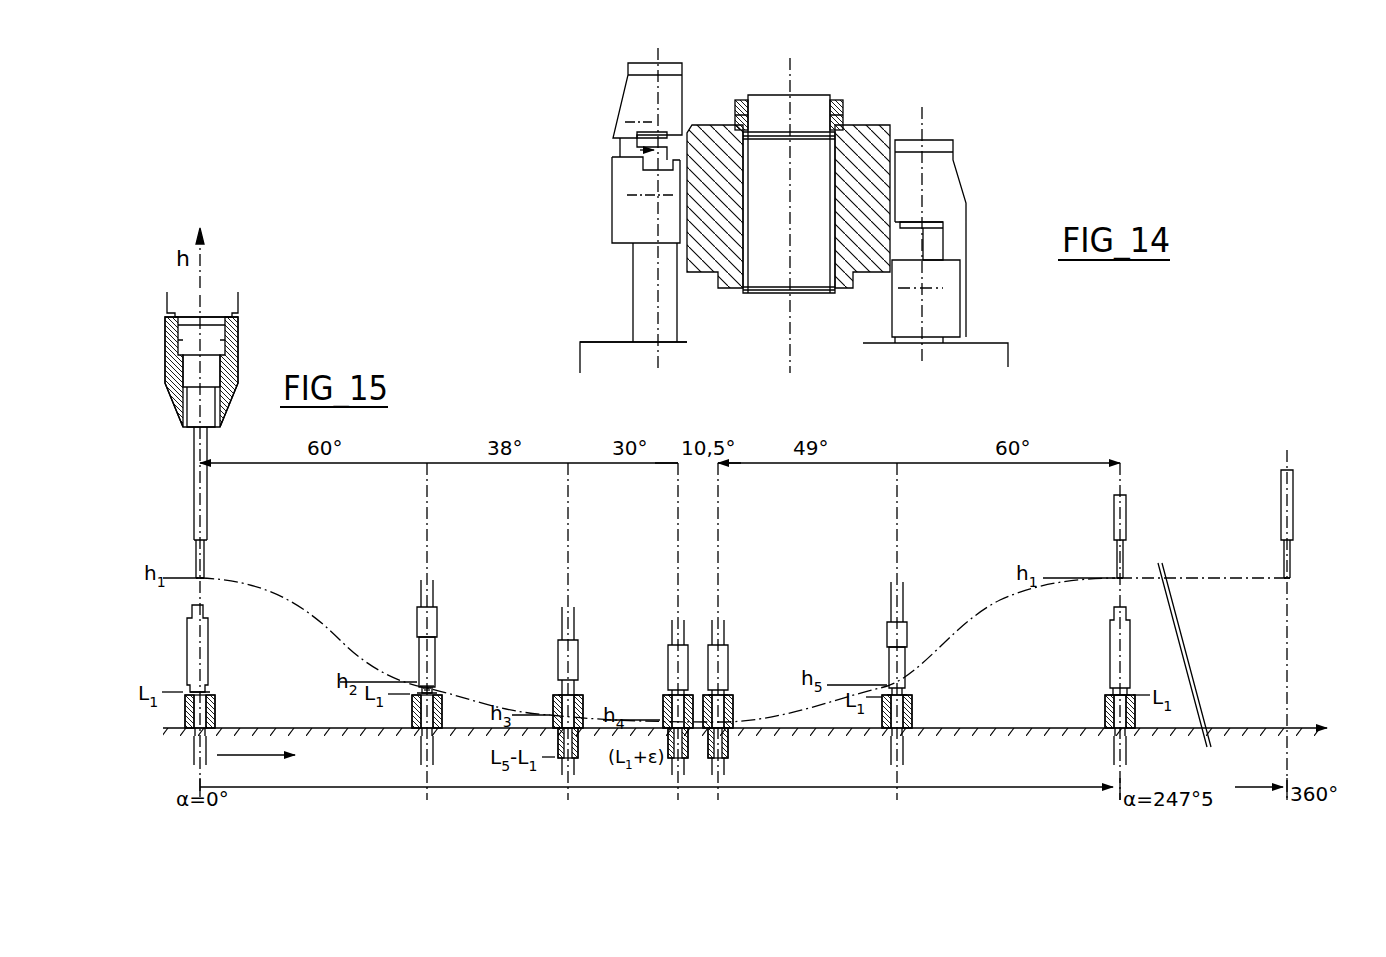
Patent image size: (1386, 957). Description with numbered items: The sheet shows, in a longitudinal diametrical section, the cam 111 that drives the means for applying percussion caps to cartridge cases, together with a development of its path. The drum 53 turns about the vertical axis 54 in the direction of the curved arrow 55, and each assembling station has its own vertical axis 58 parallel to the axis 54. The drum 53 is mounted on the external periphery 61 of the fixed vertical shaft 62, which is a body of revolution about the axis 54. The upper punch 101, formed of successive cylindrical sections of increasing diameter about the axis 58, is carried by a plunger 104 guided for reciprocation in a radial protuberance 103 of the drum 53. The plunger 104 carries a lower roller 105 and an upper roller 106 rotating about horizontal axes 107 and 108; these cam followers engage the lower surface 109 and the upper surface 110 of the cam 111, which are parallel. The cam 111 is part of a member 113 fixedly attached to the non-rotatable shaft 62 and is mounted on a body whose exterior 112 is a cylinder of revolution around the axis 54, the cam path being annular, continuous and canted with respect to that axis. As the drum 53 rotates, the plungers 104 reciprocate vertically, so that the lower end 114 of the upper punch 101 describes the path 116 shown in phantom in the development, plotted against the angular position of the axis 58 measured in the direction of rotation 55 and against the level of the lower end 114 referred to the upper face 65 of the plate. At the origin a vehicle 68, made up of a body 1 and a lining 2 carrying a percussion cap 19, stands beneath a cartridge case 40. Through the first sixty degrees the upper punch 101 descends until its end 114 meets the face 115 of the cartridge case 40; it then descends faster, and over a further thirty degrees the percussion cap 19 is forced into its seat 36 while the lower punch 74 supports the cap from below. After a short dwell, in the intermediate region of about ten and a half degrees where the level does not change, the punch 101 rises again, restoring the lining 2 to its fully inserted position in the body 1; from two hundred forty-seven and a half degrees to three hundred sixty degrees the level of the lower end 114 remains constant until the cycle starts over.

In FIG. 15, the body 1 is at (216, 710).
In FIG. 15, the lining 2 is at (214, 695).
In FIG. 15, the percussion cap 19 is at (193, 737).
In FIG. 15, the seat 36 is at (437, 692).
In FIG. 15, the cartridge case 40 is at (211, 643).
In FIG. 14, the drum 53 is at (568, 373).
In FIG. 14, the vertical axis 54 is at (784, 340).
In FIG. 15, the direction of rotation 55 is at (242, 757).
In FIG. 14, the station axis 58 is at (658, 362).
In FIG. 15, the station axis 58 is at (212, 553).
In FIG. 14, the external periphery of the shaft 61 is at (743, 294).
In FIG. 14, the vertical shaft 62 is at (812, 118).
In FIG. 15, the upper face of the plate 65 is at (250, 727).
In FIG. 15, the vehicle 68 is at (183, 714).
In FIG. 15, the lower punch 74 is at (207, 745).
In FIG. 15, the upper punch 101 is at (210, 503).
In FIG. 14, the radial protuberance 103 is at (580, 355).
In FIG. 14, the plunger 104 is at (633, 297).
In FIG. 14, the lower roller 105 is at (662, 170).
In FIG. 14, the upper roller 106 is at (648, 134).
In FIG. 14, the horizontal axis of the lower roller 107 is at (648, 210).
In FIG. 14, the horizontal axis of the upper roller 108 is at (672, 122).
In FIG. 14, the lower surface of the cam 109 is at (662, 187).
In FIG. 14, the upper surface of the cam 110 is at (640, 136).
In FIG. 14, the cam 111 is at (637, 150).
In FIG. 14, the body exterior 112 is at (925, 110).
In FIG. 14, the member 113 is at (862, 158).
In FIG. 15, the lower end of the upper punch 114 is at (203, 582).
In FIG. 15, the face of the cartridge case 115 is at (435, 690).
In FIG. 15, the cam path development 116 is at (304, 592).